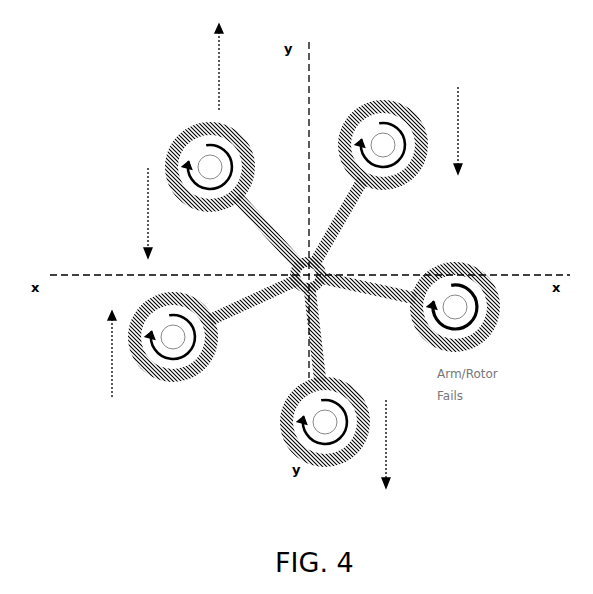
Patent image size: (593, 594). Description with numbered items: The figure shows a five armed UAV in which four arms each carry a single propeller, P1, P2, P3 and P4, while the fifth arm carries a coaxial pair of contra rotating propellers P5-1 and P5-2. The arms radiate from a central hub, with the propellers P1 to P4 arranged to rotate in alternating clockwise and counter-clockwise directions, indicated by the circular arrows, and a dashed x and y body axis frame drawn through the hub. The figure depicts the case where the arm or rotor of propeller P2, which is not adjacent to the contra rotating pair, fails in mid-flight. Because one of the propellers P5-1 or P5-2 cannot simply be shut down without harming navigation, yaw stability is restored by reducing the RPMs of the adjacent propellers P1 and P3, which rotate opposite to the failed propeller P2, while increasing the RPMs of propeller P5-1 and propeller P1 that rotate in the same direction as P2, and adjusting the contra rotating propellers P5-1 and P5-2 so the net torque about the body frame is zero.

The propeller P1 is at (380, 124).
The propeller P2 is at (480, 312).
The propeller P3 is at (325, 446).
The propeller P4 is at (165, 362).
The contra rotating propeller P5-1 is at (208, 195).
The contra rotating propeller P5-2 is at (208, 140).